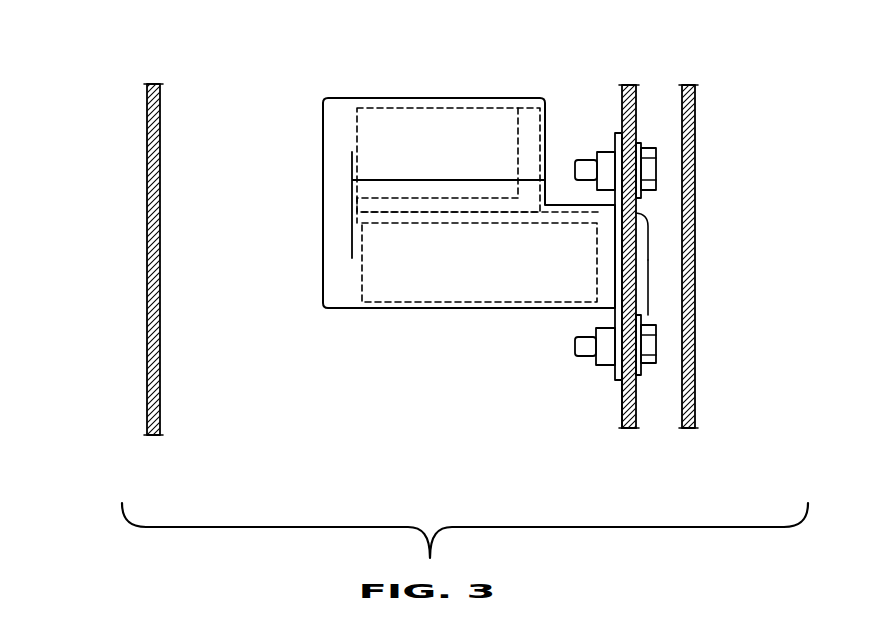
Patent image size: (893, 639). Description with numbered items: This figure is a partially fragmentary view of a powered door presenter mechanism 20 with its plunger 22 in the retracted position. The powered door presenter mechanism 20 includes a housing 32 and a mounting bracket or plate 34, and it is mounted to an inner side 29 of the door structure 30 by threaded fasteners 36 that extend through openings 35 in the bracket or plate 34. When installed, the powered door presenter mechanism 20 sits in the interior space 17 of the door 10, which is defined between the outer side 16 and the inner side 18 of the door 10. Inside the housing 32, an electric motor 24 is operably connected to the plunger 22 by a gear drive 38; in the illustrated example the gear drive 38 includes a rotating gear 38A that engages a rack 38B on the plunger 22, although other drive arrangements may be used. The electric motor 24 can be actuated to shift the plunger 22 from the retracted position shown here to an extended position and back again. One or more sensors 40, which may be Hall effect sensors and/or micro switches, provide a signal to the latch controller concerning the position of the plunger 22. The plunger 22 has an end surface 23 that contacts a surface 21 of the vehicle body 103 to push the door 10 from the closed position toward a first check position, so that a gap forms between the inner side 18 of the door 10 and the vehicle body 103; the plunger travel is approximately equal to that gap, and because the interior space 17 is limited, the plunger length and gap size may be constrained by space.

The door 10 is at (408, 72).
The outer side 16 is at (148, 198).
The interior space 17 is at (315, 383).
The inner side 18 is at (633, 108).
The powered door presenter mechanism 20 is at (439, 229).
The surface 21 is at (682, 240).
The plunger 22 is at (649, 222).
The end surface 23 is at (649, 287).
The electric motor 24 is at (445, 98).
The inner side 29 is at (622, 395).
The door structure 30 is at (628, 410).
The housing 32 is at (355, 98).
The mounting bracket or plate 34 is at (617, 133).
The openings 35 is at (612, 168).
The threaded fasteners 36 is at (603, 150).
The gear drive 38 is at (357, 223).
The rotating gear 38A is at (527, 108).
The rack 38B is at (357, 200).
The sensors 40 is at (405, 306).
The vehicle body 103 is at (684, 412).